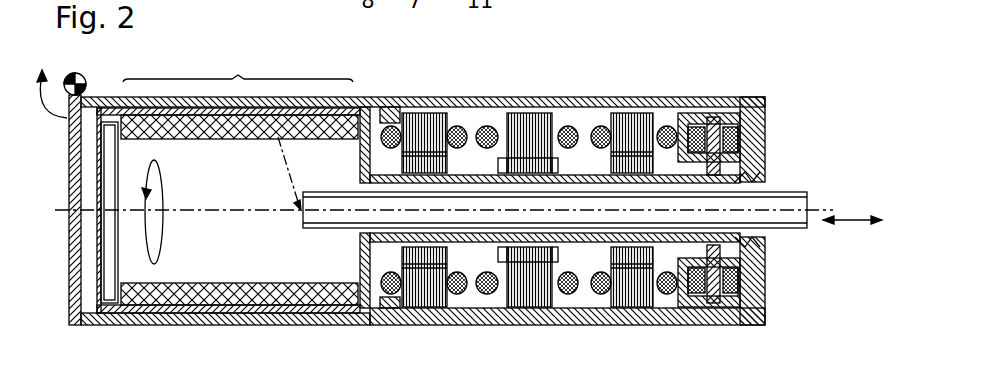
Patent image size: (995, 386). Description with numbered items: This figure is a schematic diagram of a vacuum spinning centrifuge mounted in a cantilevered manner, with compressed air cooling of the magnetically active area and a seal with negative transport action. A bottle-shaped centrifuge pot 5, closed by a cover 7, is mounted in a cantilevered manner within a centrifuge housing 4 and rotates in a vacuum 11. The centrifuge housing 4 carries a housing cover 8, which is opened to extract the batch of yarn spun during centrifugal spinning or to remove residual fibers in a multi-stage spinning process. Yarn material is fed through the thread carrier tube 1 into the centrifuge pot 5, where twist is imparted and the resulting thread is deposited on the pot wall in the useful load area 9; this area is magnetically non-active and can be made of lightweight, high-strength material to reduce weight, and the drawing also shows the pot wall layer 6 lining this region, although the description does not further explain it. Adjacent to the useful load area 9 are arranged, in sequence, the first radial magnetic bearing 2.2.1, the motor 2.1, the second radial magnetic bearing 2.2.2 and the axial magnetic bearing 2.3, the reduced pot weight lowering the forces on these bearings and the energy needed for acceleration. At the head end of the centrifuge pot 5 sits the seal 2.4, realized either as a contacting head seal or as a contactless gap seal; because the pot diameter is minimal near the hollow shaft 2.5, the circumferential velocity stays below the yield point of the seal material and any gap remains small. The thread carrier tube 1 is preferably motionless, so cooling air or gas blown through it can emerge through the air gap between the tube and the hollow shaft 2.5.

The thread carrier tube 1 is at (772, 230).
The motor 2.1 is at (533, 110).
The first radial magnetic bearing 2.2.1 is at (428, 112).
The second radial magnetic bearing 2.2.2 is at (632, 112).
The axial magnetic bearing 2.3 is at (700, 128).
The seal 2.4 is at (755, 170).
The hollow shaft 2.5 is at (605, 245).
The centrifuge housing 4 is at (168, 327).
The centrifuge pot 5 is at (248, 310).
The damping layer 6 is at (253, 137).
The cover 7 is at (97, 275).
The housing cover 8 is at (69, 170).
The useful load area 9 is at (238, 63).
The vacuum 11 is at (475, 298).